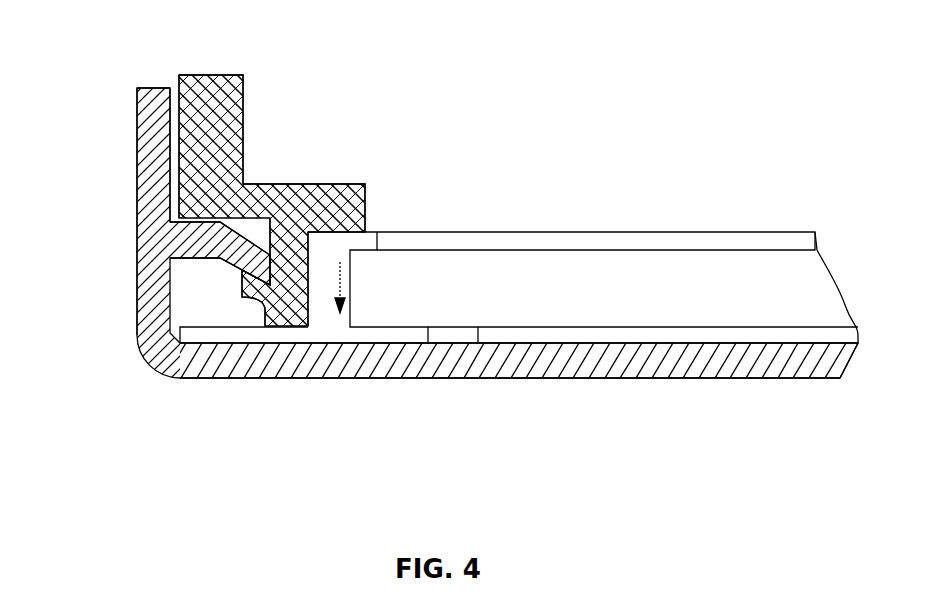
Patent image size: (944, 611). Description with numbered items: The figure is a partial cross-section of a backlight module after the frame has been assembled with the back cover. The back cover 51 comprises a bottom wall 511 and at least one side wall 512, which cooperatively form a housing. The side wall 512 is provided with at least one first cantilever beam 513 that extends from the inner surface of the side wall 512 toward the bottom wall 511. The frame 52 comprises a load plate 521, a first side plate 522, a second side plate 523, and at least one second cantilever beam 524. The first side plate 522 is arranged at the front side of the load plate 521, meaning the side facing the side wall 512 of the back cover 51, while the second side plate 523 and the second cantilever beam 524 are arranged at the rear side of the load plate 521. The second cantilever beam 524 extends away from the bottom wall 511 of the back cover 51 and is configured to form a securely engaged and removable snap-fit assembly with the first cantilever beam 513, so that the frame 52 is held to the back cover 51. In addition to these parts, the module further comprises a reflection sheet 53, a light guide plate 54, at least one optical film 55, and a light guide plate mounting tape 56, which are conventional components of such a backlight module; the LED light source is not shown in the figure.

The back cover 51 is at (344, 381).
The bottom wall 511 is at (547, 378).
The side wall 512 is at (138, 173).
The first cantilever beam 513 is at (217, 258).
The frame 52 is at (260, 100).
The load plate 521 is at (347, 184).
The first side plate 522 is at (243, 135).
The second side plate 523 is at (310, 255).
The second cantilever beam 524 is at (252, 297).
The reflection sheet 53 is at (663, 336).
The light guide plate 54 is at (738, 292).
The optical film 55 is at (645, 232).
The light guide plate mounting tape 56 is at (248, 334).